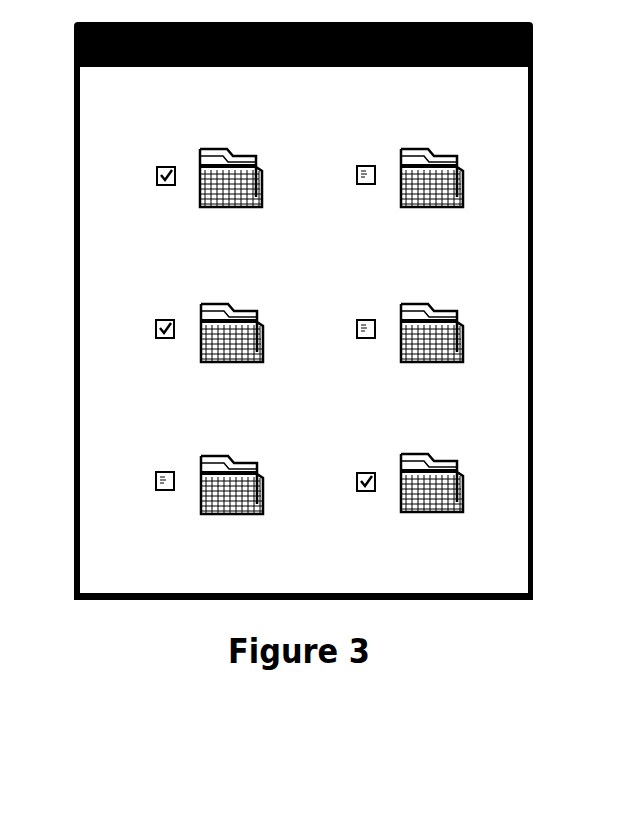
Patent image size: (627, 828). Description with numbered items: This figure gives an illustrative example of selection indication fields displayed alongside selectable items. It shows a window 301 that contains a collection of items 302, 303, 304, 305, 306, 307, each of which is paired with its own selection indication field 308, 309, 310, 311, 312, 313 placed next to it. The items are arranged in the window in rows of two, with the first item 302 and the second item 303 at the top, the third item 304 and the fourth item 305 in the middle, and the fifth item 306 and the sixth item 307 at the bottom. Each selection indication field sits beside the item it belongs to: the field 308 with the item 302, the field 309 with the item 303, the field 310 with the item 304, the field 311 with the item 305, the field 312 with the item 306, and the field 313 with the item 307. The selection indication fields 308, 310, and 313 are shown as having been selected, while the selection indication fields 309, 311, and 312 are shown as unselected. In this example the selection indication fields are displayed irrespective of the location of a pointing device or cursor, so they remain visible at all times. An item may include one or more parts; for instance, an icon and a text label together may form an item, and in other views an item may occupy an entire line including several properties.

The window 301 is at (533, 137).
The item 302 is at (241, 146).
The item 303 is at (401, 146).
The item 304 is at (241, 300).
The item 305 is at (401, 300).
The item 306 is at (241, 452).
The item 307 is at (401, 452).
The selection indication field 308 is at (167, 165).
The selection indication field 309 is at (356, 172).
The selection indication field 310 is at (163, 318).
The selection indication field 311 is at (356, 320).
The selection indication field 312 is at (165, 470).
The selection indication field 313 is at (357, 473).